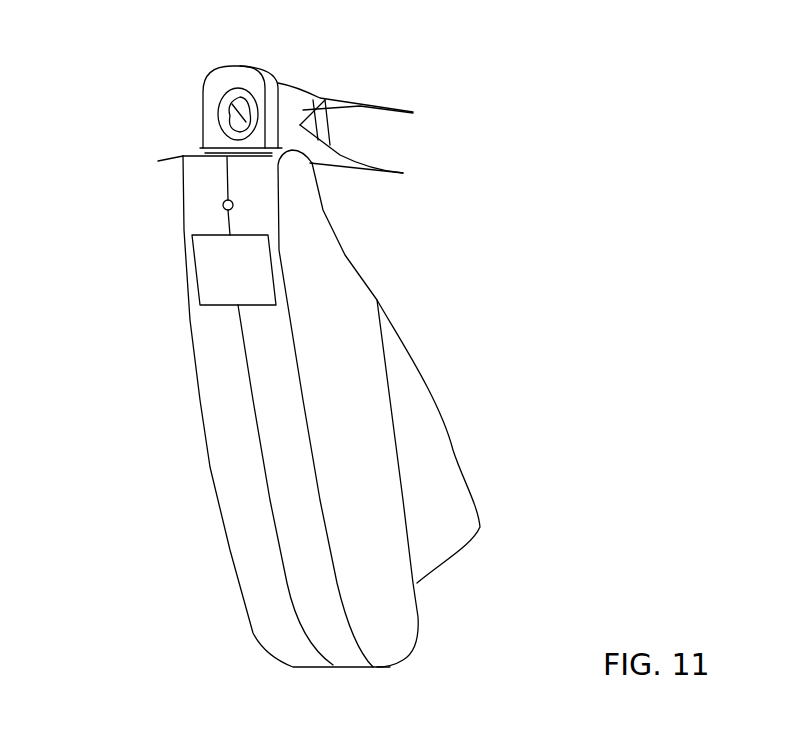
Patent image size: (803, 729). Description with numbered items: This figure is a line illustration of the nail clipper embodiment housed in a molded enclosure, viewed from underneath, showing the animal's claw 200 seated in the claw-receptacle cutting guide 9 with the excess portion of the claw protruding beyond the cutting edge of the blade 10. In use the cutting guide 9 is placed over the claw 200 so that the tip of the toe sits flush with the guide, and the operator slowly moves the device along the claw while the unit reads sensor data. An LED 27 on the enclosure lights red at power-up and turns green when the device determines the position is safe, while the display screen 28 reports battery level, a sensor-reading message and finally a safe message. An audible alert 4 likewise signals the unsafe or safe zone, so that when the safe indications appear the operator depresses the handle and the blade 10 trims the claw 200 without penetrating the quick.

The audible alert 4 is at (453, 522).
The claw-receptacle cutting guide 9 is at (323, 113).
The blade 10 is at (275, 78).
The animal's claw 200 is at (222, 108).
The LED 27 is at (234, 207).
The display screen 28 is at (222, 283).